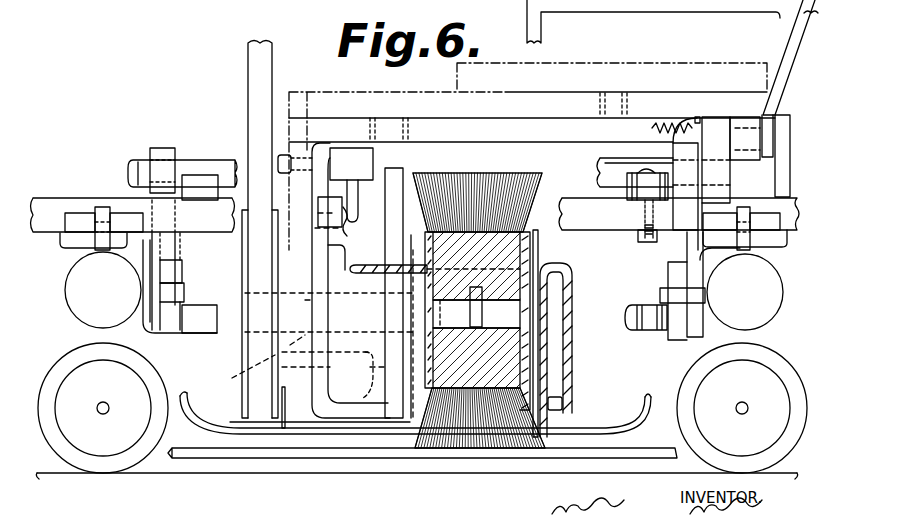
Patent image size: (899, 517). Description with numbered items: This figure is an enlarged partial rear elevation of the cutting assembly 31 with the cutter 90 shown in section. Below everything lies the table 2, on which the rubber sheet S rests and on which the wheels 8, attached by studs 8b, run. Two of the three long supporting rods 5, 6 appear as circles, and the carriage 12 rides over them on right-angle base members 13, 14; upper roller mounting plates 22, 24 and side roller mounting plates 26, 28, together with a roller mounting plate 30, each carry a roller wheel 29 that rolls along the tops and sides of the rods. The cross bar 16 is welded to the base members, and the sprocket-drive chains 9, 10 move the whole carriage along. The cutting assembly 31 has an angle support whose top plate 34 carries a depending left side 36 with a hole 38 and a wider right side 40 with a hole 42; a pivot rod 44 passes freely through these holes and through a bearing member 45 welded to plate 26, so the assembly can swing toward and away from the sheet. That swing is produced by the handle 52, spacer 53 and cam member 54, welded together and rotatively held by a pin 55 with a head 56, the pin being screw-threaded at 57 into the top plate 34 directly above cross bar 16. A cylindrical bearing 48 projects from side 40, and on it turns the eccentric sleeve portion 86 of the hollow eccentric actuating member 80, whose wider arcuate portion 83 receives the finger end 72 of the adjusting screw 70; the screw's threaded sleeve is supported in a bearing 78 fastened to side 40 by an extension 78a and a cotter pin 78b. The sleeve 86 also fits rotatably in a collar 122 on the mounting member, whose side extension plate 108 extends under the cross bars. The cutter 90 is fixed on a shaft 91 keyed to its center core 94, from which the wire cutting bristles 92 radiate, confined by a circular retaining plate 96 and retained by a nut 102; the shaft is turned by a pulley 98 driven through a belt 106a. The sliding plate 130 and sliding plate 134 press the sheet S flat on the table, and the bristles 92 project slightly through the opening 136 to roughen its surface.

The table 2 is at (246, 476).
The supporting rod 5 is at (80, 283).
The supporting rod 6 is at (771, 290).
The wheel 8 is at (152, 435).
The stud 8b is at (99, 405).
The sprocket-drive chain 9 is at (205, 178).
The sprocket-drive chain 10 is at (645, 188).
The carriage 12 is at (307, 90).
The base member 13 is at (170, 246).
The base member 14 is at (692, 337).
The cross bar 16 is at (679, 214).
The upper roller mounting plate 22 is at (73, 222).
The upper roller mounting plate 24 is at (772, 222).
The side roller mounting plate 26 is at (155, 336).
The side roller mounting plate 28 is at (688, 268).
The roller wheel 29 is at (103, 207).
The roller mounting plate 30 is at (554, 173).
The cutting assembly 31 is at (586, 326).
The top plate 34 is at (532, 117).
The left side 36 is at (686, 173).
The hole 38 is at (691, 226).
The right wider side 40 is at (306, 197).
The hole 42 is at (310, 192).
The pivot rod 44 is at (130, 165).
The bearing member 45 is at (160, 148).
The cylindrical bearing 48 is at (236, 377).
The handle 52 is at (783, 80).
The spacer 53 is at (740, 118).
The cam member 54 is at (720, 160).
The pin 55 is at (770, 162).
The head 56 is at (784, 130).
The screw-threaded end 57 is at (680, 122).
The adjusting screw 70 is at (359, 195).
The finger end 72 is at (320, 220).
The bearing 78 is at (351, 164).
The extension 78a is at (285, 158).
The cotter pin 78b is at (288, 163).
The eccentric actuating member 80 is at (335, 390).
The wider arcuate portion 83 is at (348, 230).
The eccentric sleeve portion 86 is at (356, 384).
The cutter 90 is at (470, 200).
The shaft 91 is at (222, 350).
The wire cutting bristles 92 is at (475, 170).
The center core 94 is at (477, 321).
The circular retaining plate 96 is at (531, 248).
The pulley 98 is at (425, 235).
The nut 102 is at (549, 330).
The belt 106a is at (258, 62).
The side extension plate 108 is at (395, 178).
The collar 122 is at (440, 262).
The sliding plate 130 is at (357, 440).
The sliding plate 134 is at (320, 437).
The opening 136 is at (415, 422).
The rubber sheet S is at (203, 456).